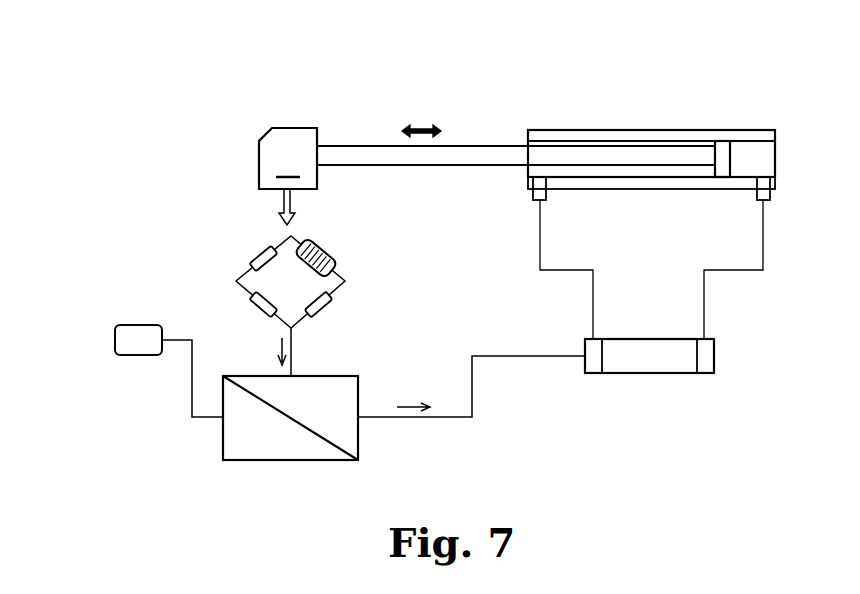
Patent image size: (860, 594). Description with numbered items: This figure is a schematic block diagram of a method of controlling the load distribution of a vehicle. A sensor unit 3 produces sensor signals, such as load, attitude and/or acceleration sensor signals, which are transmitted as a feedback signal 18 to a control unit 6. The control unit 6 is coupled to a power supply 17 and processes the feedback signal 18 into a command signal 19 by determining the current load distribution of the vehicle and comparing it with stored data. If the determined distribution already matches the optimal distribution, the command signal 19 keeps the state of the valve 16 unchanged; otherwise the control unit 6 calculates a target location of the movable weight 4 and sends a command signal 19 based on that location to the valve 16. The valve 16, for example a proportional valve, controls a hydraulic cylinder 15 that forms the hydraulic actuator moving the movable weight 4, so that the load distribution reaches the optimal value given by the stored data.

The sensor unit 3 is at (245, 277).
The movable weight 4 is at (487, 175).
The control unit 6 is at (278, 462).
The hydraulic cylinder 15 is at (635, 130).
The valve 16 is at (660, 373).
The power supply 17 is at (115, 340).
The feedback signal 18 is at (277, 352).
The command signal 19 is at (412, 400).